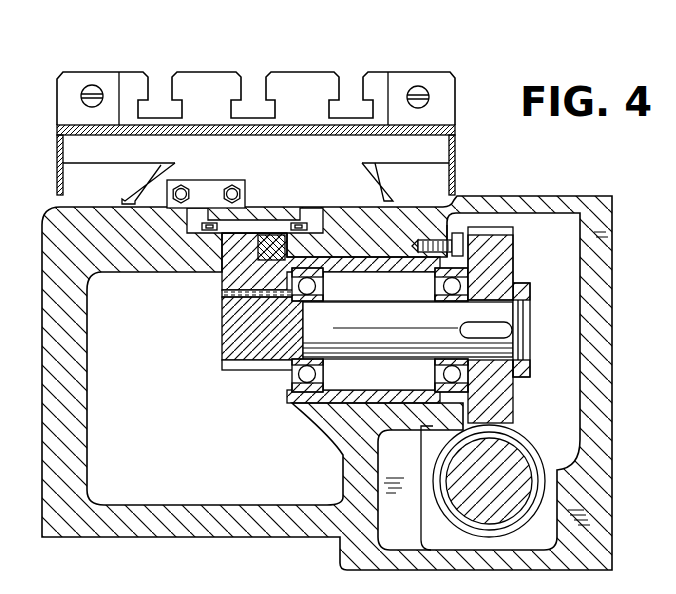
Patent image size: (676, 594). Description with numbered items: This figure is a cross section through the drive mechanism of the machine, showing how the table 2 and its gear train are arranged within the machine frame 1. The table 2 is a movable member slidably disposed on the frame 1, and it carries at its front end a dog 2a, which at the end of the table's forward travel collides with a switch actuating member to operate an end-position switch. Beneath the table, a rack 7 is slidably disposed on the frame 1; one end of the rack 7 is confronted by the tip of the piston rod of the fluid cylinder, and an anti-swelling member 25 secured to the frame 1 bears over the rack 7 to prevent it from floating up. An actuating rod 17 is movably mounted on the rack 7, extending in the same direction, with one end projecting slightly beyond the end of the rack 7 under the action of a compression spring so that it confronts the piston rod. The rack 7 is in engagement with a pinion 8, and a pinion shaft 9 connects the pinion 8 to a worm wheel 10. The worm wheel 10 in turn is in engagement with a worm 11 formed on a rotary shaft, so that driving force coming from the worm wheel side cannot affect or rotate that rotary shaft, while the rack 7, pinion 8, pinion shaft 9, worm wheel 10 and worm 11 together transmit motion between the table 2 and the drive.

The machine frame 1 is at (67, 203).
The table 2 is at (304, 85).
The dog 2a is at (208, 185).
The rack 7 is at (222, 276).
The pinion 8 is at (247, 355).
The pinion shaft 9 is at (528, 318).
The worm wheel 10 is at (505, 257).
The worm 11 is at (512, 452).
The actuating rod 17 is at (272, 250).
The anti-swelling member 25 is at (272, 228).